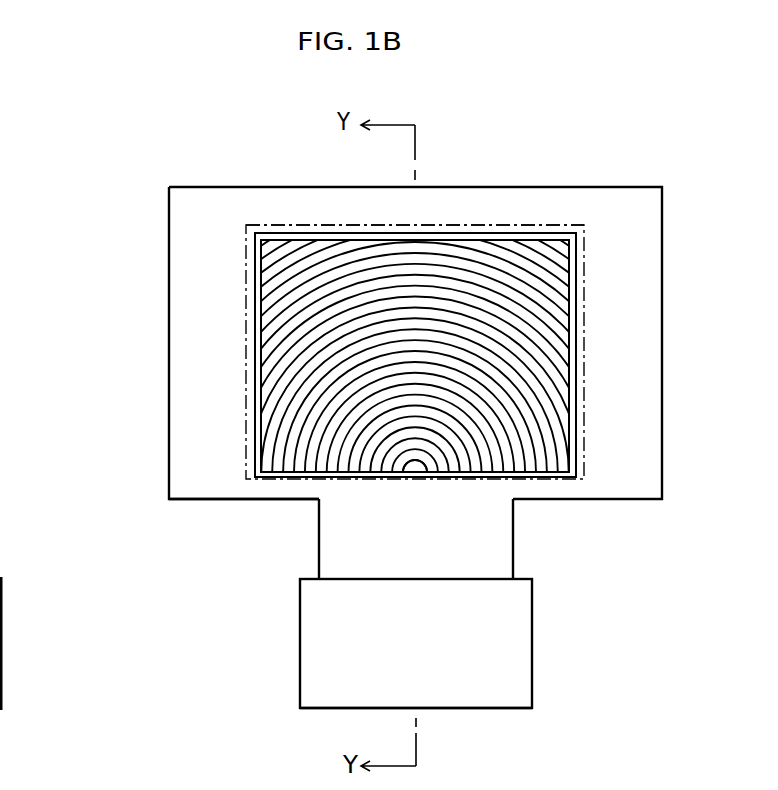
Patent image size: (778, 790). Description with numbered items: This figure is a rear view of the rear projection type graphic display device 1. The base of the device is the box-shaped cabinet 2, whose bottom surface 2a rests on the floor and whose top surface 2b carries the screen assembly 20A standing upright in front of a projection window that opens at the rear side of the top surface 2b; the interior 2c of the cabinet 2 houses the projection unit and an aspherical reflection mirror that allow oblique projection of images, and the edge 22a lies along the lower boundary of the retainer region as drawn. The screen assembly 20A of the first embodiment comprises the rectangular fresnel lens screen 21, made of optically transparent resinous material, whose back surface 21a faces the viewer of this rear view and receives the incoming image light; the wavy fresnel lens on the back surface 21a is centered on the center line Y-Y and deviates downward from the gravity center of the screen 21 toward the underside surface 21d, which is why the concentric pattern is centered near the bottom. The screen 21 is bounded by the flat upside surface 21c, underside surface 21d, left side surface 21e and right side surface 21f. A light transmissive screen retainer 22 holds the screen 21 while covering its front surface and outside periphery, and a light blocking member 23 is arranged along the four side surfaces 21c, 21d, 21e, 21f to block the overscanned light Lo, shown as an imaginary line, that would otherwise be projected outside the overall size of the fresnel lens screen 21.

The graphic display device 1 is at (123, 178).
The screen assembly 20A is at (68, 262).
The fresnel lens screen 21 is at (246, 367).
The back surface 21a is at (432, 463).
The upside surface 21c is at (300, 240).
The underside surface 21d is at (308, 473).
The left side surface 21e is at (260, 396).
The right side surface 21f is at (569, 375).
The screen retainer 22 is at (158, 315).
The base bottom edge 22a is at (192, 490).
The light blocking member 23 is at (257, 280).
The overscanned light Lo is at (492, 225).
The cabinet 2 is at (547, 652).
The bottom surface 2a is at (513, 708).
The top surface 2b is at (527, 579).
The interior 2c is at (2, 620).